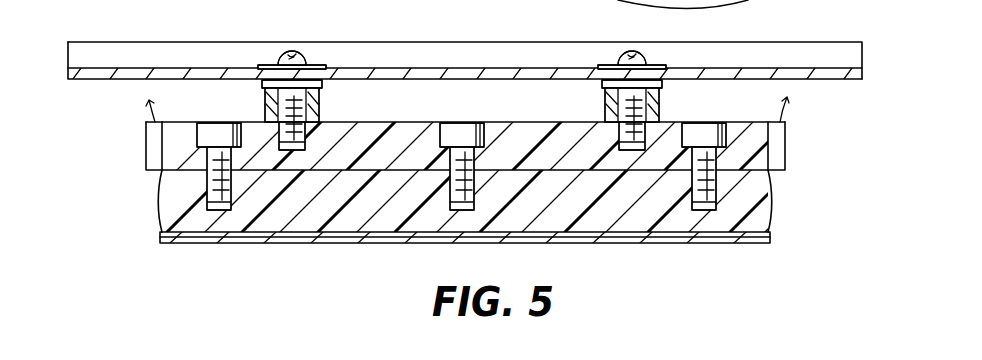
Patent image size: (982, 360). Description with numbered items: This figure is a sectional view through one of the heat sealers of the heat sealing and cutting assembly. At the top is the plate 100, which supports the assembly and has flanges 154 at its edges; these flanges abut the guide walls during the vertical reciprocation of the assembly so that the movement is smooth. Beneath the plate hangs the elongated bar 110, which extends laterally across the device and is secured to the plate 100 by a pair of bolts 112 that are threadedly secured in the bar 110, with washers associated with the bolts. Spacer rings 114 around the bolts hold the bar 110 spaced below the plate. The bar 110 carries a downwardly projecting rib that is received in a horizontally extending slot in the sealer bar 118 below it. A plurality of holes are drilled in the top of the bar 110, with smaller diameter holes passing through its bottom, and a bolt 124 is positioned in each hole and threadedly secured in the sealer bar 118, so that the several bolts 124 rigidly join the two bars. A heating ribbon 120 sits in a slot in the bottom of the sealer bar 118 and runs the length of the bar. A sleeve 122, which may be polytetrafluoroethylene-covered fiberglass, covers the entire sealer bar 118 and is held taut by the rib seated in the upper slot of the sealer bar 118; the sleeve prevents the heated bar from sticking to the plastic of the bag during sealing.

The plate 100 is at (764, 68).
The flanges 154 is at (816, 52).
The bolts 112 is at (302, 63).
The spacer rings 114 is at (318, 110).
The bolts 124 is at (231, 123).
The elongated bar 110 is at (657, 137).
The sealer bar 118 is at (760, 193).
The heating ribbon 120 is at (768, 236).
The sleeve 122 is at (172, 172).